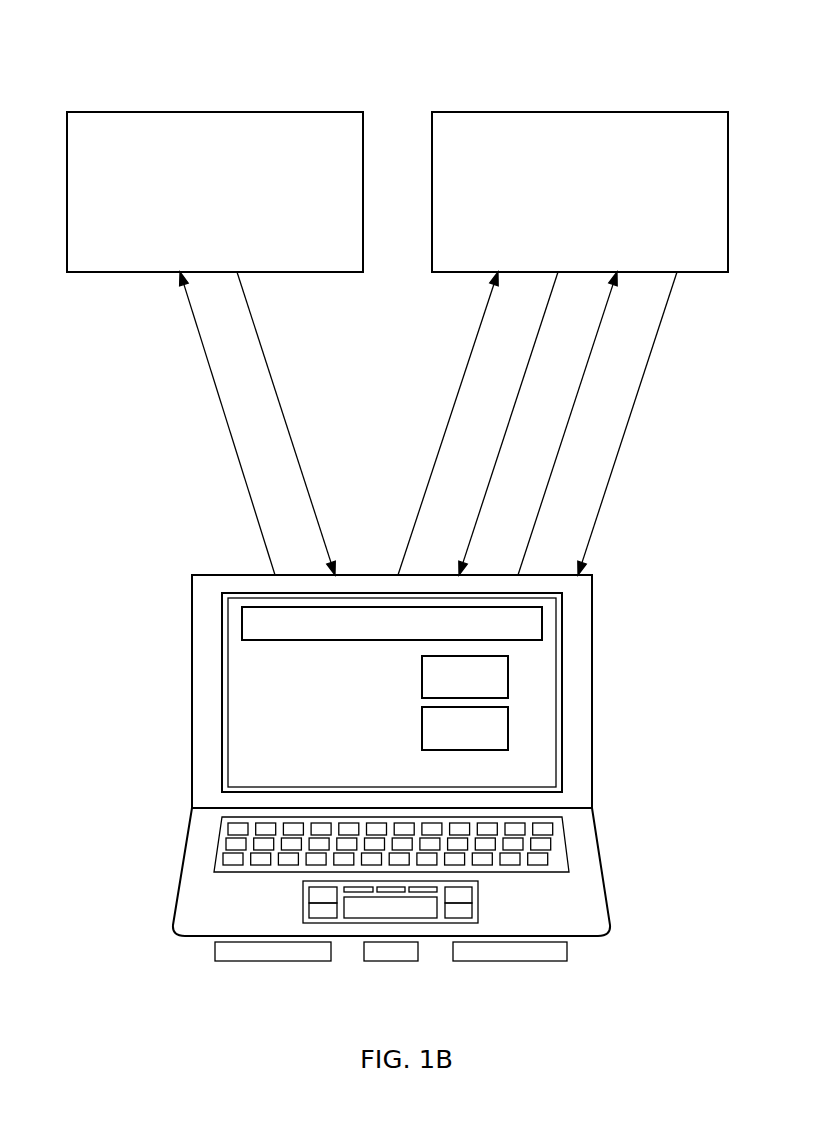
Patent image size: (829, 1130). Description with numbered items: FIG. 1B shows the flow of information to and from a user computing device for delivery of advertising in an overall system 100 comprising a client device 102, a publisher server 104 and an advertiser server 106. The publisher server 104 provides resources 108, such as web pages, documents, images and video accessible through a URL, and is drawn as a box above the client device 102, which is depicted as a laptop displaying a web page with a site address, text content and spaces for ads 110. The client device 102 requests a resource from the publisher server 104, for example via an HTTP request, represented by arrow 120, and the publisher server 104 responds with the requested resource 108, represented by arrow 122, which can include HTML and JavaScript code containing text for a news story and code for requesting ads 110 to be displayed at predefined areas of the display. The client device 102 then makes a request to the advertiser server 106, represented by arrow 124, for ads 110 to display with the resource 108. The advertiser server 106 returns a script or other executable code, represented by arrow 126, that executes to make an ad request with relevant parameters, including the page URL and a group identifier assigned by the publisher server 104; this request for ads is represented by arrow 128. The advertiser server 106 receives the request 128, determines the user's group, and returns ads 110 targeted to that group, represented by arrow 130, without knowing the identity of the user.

The advertising system 100 is at (125, 32).
The client device 102 is at (248, 575).
The publisher server 104 is at (128, 112).
The advertiser server 106 is at (493, 112).
The resources 108 is at (237, 719).
The ads 110 is at (528, 677).
The request 120 is at (222, 408).
The response 122 is at (275, 390).
The request to the ad server 124 is at (456, 396).
The script or other executable code 126 is at (497, 458).
The request for ads 128 is at (568, 425).
The response 130 is at (636, 393).